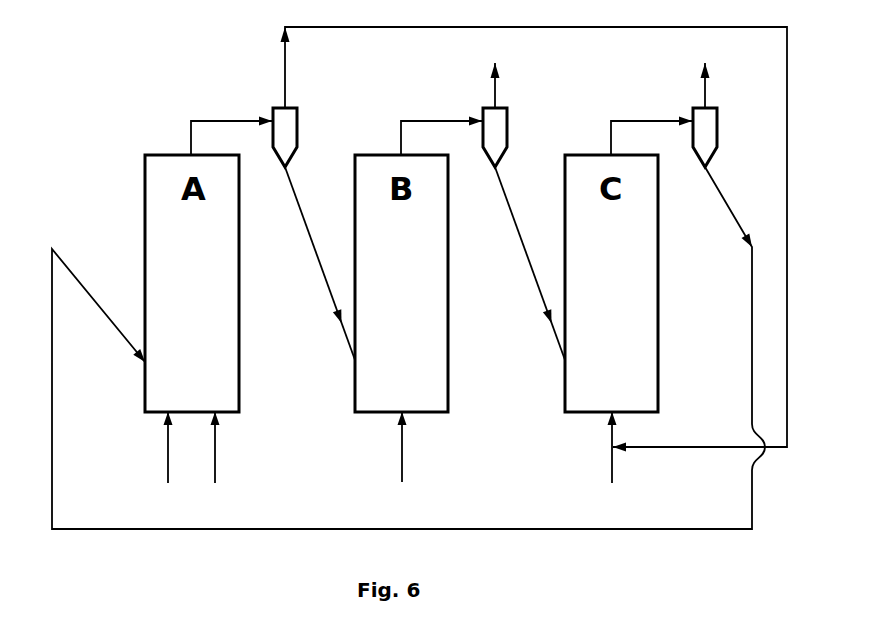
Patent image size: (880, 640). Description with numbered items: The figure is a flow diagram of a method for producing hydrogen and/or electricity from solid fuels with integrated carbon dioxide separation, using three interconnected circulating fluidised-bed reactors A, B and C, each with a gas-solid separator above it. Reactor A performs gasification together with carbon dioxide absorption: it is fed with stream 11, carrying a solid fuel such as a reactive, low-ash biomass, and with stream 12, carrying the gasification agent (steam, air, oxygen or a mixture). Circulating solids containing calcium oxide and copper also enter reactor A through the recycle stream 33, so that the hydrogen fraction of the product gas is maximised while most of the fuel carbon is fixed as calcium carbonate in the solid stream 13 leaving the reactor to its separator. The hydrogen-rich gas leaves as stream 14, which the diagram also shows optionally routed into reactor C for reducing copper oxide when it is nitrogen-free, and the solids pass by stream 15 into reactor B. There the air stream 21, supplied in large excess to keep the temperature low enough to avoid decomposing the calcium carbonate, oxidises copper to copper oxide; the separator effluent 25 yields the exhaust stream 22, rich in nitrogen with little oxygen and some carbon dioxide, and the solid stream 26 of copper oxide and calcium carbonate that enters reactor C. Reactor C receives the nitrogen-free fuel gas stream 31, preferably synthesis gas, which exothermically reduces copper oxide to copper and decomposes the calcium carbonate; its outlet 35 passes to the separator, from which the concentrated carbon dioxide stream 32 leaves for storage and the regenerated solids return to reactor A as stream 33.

The solid fuel stream 11 is at (155, 447).
The gasification agent stream 12 is at (202, 447).
The solid stream leaving reactor A 13 is at (217, 136).
The gas stream from first cyclone (optional recycle to reactor C) 14 is at (522, 255).
The solids stream from first cyclone to reactor B 15 is at (317, 263).
The air stream 21 is at (388, 447).
The gas stream leaving reactor B 22 is at (482, 85).
The effluent line from reactor B to second cyclone 25 is at (427, 136).
The solid stream leaving reactor B 26 is at (526, 263).
The nitrogen-free fuel gas stream 31 is at (599, 447).
The concentrated CO2 stream 32 is at (692, 85).
The solids recycle stream from third cyclone to reactor A 33 is at (408, 348).
The effluent line from reactor C to third cyclone 35 is at (637, 136).